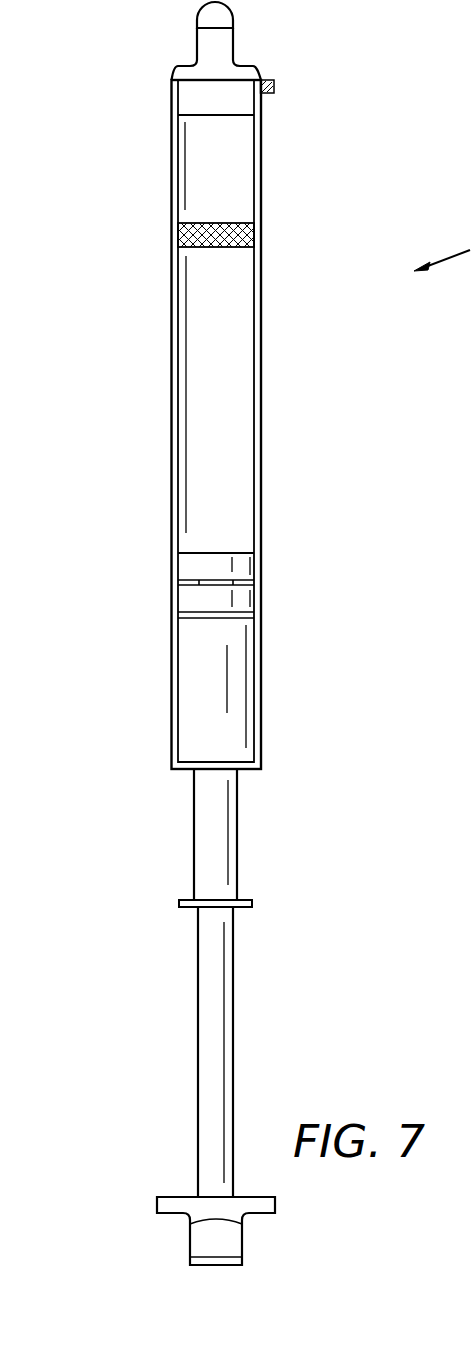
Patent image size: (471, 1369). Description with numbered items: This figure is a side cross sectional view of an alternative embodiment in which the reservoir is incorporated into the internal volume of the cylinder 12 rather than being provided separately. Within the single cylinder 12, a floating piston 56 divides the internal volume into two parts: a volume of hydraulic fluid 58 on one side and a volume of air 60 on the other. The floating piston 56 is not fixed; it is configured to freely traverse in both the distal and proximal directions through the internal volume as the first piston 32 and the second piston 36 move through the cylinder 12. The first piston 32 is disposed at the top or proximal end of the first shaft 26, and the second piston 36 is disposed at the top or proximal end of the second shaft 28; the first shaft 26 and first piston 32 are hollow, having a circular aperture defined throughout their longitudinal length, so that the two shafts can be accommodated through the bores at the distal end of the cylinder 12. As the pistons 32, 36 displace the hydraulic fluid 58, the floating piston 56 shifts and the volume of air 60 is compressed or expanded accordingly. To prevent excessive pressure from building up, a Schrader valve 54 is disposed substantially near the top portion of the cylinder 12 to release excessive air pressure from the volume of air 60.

The cylinder 12 is at (171, 508).
The Schrader valve 54 is at (272, 78).
The volume of air 60 is at (203, 168).
The floating piston 56 is at (243, 233).
The volume of hydraulic fluid 58 is at (225, 397).
The second piston 36 is at (235, 562).
The first piston 32 is at (242, 598).
The first shaft 26 is at (228, 833).
The second shaft 28 is at (202, 1028).